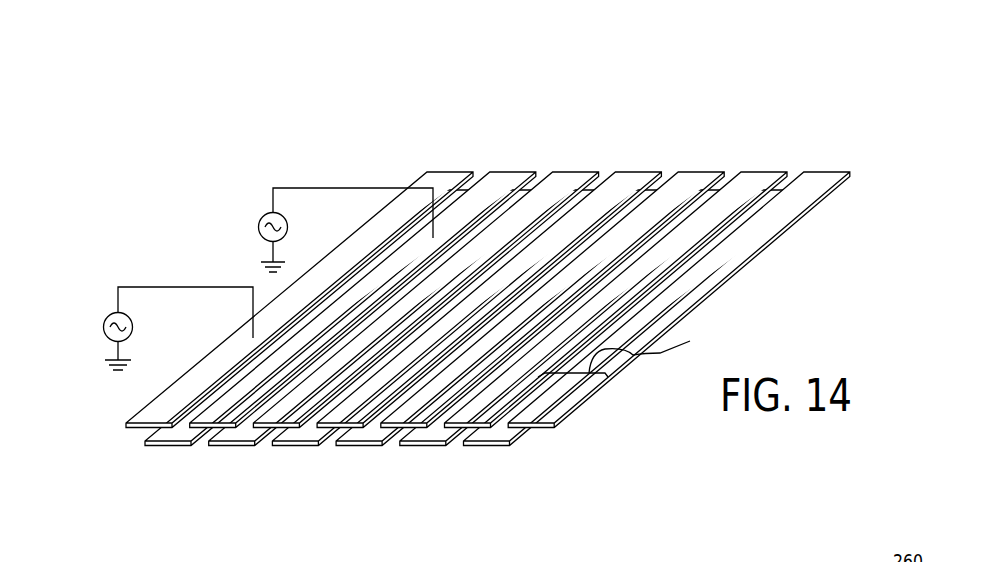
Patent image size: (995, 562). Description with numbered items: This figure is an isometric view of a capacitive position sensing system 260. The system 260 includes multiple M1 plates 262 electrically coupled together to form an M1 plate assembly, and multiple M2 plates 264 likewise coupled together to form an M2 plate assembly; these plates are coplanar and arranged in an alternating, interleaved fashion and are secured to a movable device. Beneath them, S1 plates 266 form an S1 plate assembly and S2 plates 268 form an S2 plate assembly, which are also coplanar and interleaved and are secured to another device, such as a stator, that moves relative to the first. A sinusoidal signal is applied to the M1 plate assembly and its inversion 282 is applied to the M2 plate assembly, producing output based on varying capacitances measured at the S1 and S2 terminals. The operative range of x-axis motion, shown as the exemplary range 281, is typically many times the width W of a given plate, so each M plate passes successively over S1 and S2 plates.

The position sensing system 260 is at (804, 64).
The M1 plates 262 is at (427, 173).
The M2 plates 264 is at (492, 172).
The S1 plates 266 is at (155, 450).
The S2 plates 268 is at (217, 450).
The exemplary range of x-axis motion 281 is at (106, 298).
The inversion of the sinusoidal signal 282 is at (260, 206).
The electrode pitch width W is at (629, 346).